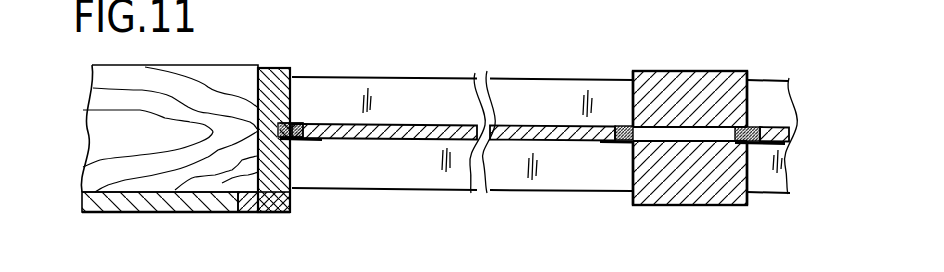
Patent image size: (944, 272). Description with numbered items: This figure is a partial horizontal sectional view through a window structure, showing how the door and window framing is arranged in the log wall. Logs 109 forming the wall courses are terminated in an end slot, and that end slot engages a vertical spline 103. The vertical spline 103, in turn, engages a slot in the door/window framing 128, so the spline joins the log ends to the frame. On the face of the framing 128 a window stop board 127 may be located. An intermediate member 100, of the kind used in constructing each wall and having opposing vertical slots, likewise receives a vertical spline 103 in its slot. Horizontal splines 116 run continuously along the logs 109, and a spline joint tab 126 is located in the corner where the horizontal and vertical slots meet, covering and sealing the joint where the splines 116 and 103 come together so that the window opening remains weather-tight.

The intermediate member 100 is at (683, 72).
The vertical spline 103 is at (300, 123).
The log 109 is at (405, 178).
The spline 116 is at (403, 123).
The spline joint tab 126 is at (313, 139).
The window stop board 127 is at (262, 214).
The door/window framing 128 is at (275, 68).